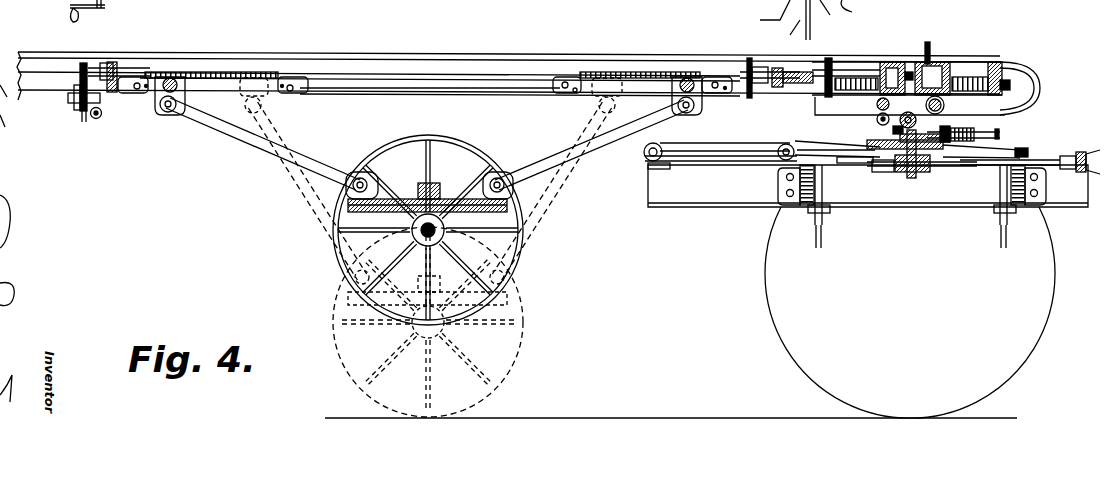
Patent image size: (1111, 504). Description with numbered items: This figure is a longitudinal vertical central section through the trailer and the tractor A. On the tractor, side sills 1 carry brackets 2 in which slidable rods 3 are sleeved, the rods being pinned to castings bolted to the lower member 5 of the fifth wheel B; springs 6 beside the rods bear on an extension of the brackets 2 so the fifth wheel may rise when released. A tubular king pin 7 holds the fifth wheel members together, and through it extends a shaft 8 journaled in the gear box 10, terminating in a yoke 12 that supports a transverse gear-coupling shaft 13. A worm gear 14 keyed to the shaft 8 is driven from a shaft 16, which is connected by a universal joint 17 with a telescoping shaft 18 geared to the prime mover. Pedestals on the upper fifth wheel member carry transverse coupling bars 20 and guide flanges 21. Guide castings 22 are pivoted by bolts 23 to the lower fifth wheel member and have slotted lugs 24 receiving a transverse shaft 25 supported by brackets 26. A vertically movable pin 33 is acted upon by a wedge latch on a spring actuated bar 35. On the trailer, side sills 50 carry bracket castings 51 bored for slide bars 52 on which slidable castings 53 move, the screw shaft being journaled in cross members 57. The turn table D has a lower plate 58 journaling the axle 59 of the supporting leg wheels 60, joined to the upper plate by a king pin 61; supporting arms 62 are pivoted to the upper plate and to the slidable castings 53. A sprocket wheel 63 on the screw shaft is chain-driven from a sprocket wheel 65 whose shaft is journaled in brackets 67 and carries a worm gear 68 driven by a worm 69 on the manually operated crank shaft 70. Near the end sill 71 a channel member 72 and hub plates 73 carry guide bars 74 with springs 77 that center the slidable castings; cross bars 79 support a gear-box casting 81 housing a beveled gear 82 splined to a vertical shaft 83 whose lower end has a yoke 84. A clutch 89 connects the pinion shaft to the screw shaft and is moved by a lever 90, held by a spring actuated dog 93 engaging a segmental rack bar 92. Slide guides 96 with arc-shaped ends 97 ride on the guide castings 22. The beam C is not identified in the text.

The side sills 1 is at (723, 183).
The brackets 2 is at (912, 197).
The slidable rods 3 is at (823, 236).
The lower member of the fifth wheel 5 is at (854, 163).
The springs 6 is at (780, 180).
The tubular king pin 7 is at (888, 172).
The shaft 8 is at (910, 172).
The gear box 10 is at (946, 170).
The yoke 12 is at (963, 130).
The transverse gear-coupling shaft 13 is at (1032, 6).
The worm gear 14 is at (921, 178).
The shaft 16 is at (966, 160).
The universal joint 17 is at (1070, 156).
The shaft 18 is at (1090, 156).
The transverse coupling bars 20 is at (891, 128).
The guide flanges 21 is at (850, 142).
The guide castings 22 is at (714, 142).
The bolts 23 is at (778, 153).
The slotted lugs 24 is at (651, 160).
The transverse shaft 25 is at (665, 157).
The brackets 26 is at (658, 166).
The vertically movable pin 33 is at (687, 6).
The spring actuated bar 35 is at (982, 134).
The side sills 50 is at (532, 94).
The bracket castings 51 is at (145, 94).
The slide bars 52 is at (221, 80).
The slidable castings 53 is at (172, 113).
The cross members 57 is at (115, 62).
The lower plate 58 is at (278, 190).
The axle 59 is at (420, 232).
The supporting leg wheels 60 is at (522, 256).
The king pin 61 is at (430, 185).
The supporting arms 62 is at (283, 130).
The sprocket wheel 63 is at (88, 72).
The sprocket wheel 65 is at (75, 105).
The brackets 67 is at (74, 95).
The worm gear 68 is at (84, 122).
The worm 69 is at (99, 117).
The crank shaft 70 is at (92, 12).
The end sill 71 is at (996, 66).
The channel member 72 is at (829, 62).
The hub plates 73 is at (1003, 85).
The guide bars 74 is at (970, 78).
The springs 77 is at (855, 80).
The cross bars 79 is at (877, 105).
The gear-box casting 81 is at (890, 66).
The beveled gear 82 is at (928, 62).
The vertical shaft 83 is at (910, 70).
The yoke 84 is at (944, 112).
The clutch 89 is at (772, 68).
The lever 90 is at (808, 28).
The segmental rack bar 92 is at (765, 20).
The spring actuated dog 93 is at (789, 29).
The slide guides 96 is at (1022, 68).
The arc-shaped ends 97 is at (1036, 89).
The tractor A is at (894, 311).
The fifth wheel B is at (815, 139).
The beam C is at (508, 64).
The turn table D is at (411, 272).